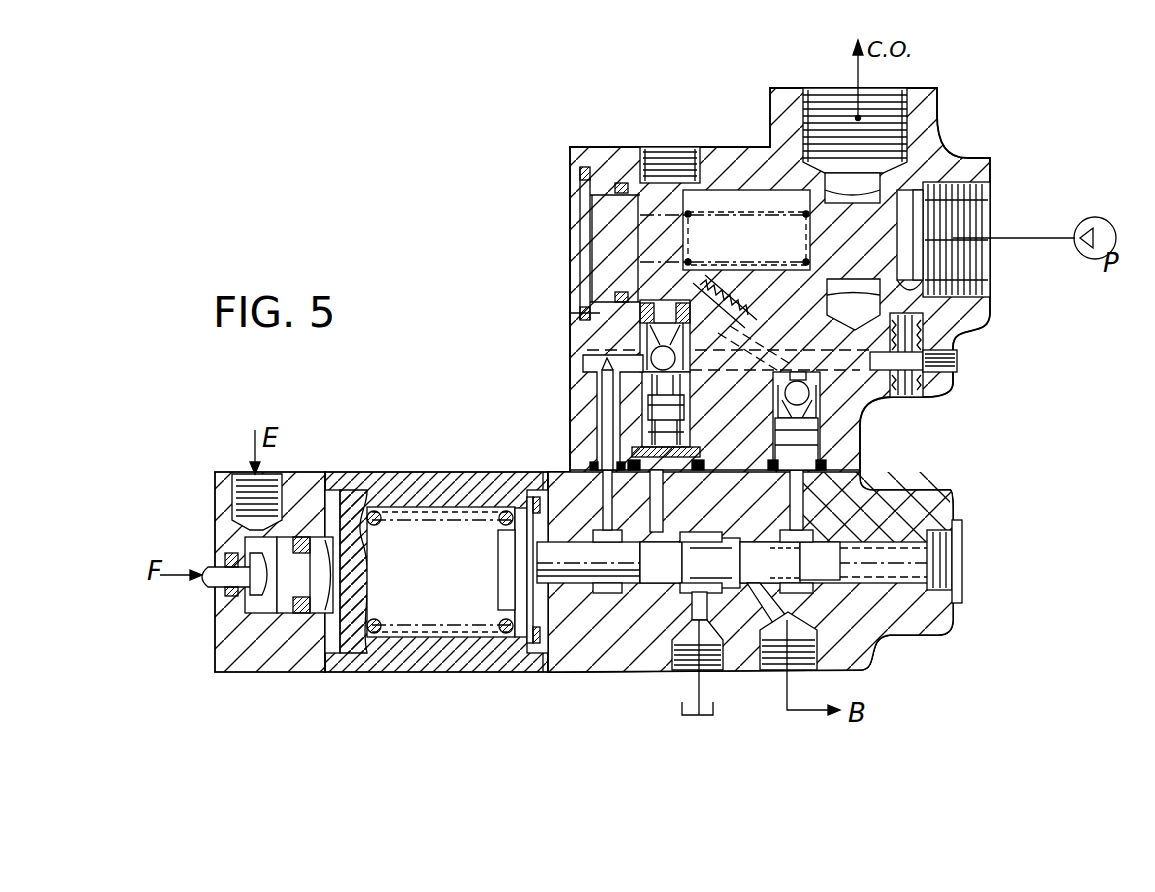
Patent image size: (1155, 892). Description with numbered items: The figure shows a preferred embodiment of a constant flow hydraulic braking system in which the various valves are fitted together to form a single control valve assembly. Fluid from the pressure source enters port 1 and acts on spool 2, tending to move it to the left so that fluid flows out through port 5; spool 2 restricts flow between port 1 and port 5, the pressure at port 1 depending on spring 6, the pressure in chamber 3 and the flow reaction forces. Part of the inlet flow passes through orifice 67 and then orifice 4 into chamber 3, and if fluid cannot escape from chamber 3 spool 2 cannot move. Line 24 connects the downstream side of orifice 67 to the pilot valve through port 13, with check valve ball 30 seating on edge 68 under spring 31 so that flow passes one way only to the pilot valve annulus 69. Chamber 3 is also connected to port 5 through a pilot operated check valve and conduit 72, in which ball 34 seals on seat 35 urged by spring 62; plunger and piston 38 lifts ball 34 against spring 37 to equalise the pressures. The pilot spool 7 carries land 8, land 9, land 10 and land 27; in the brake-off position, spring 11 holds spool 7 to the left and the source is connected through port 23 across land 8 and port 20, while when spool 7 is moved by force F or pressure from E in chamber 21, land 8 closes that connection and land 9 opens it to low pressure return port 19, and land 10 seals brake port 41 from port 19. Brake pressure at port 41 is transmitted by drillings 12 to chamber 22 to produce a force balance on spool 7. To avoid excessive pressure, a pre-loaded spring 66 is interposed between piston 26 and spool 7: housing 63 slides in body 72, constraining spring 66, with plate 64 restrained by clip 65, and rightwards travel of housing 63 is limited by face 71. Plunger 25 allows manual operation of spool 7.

The port 1 is at (963, 207).
The spool 2 is at (905, 195).
The chamber 3 is at (653, 283).
The orifice 4 is at (728, 300).
The port 5 is at (895, 100).
The spring 6 is at (660, 257).
The spool 7 is at (553, 549).
The land 8 is at (537, 573).
The land 9 is at (690, 558).
The land 10 is at (690, 575).
The spring 11 is at (893, 557).
The drillings 12 is at (763, 607).
The port 13 is at (793, 497).
The port 19 is at (675, 662).
The port 20 is at (660, 497).
The chamber 21 is at (257, 602).
The chamber 22 is at (940, 517).
The port 23 is at (603, 497).
The line 24 is at (797, 375).
The plunger 25 is at (215, 568).
The piston 26 is at (320, 597).
The land 27 is at (832, 558).
The check valve ball 30 is at (810, 395).
The spring 31 is at (813, 413).
The ball 34 is at (650, 340).
The seat 35 is at (655, 358).
The spring 37 is at (602, 385).
The plunger and piston 38 is at (640, 435).
The port 41 is at (777, 643).
The spring 62 is at (683, 277).
The housing 63 is at (350, 510).
The plate 64 is at (522, 520).
The clip 65 is at (533, 523).
The spring 66 is at (455, 623).
The orifice 67 is at (893, 318).
The edge 68 is at (818, 370).
The annulus 69 is at (860, 500).
The face 71 is at (556, 670).
The conduit 72 is at (253, 653).